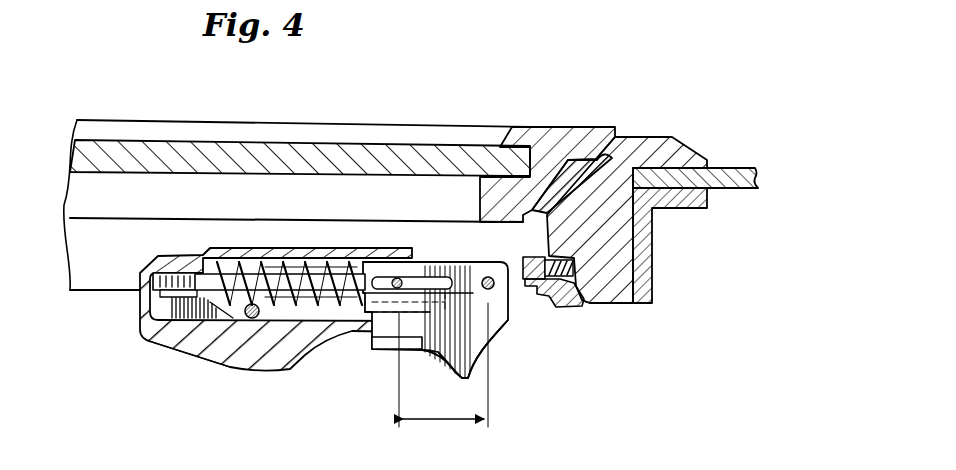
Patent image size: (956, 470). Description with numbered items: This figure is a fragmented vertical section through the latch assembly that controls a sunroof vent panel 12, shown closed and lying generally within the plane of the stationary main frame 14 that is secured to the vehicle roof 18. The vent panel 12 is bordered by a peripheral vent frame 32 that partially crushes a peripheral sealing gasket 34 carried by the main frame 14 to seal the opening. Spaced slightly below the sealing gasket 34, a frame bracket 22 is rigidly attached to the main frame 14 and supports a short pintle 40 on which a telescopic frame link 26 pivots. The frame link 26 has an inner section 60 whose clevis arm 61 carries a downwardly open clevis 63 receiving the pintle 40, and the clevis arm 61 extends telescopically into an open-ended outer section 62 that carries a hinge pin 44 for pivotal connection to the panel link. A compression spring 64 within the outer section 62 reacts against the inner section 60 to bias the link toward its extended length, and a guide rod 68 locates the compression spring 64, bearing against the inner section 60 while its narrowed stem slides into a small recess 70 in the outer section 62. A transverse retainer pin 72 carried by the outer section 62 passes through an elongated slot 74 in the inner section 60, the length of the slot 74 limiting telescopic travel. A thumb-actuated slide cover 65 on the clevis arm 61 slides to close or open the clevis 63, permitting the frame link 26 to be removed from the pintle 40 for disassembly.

The vent panel 12 is at (123, 148).
The main frame 14 is at (672, 138).
The roof 18 is at (733, 177).
The frame bracket 22 is at (586, 304).
The frame link 26 is at (197, 367).
The vent frame 32 is at (507, 126).
The sealing gasket 34 is at (575, 165).
The pintle 40 is at (490, 277).
The hinge pin 44 is at (252, 318).
The inner section 60 is at (430, 356).
The clevis arm 61 is at (420, 262).
The outer section 62 is at (280, 343).
The clevis 63 is at (538, 293).
The compression spring 64 is at (203, 275).
The slide cover 65 is at (463, 350).
The guide rod 68 is at (300, 258).
The recess 70 is at (170, 290).
The retainer pin 72 is at (393, 283).
The slot 74 is at (417, 268).